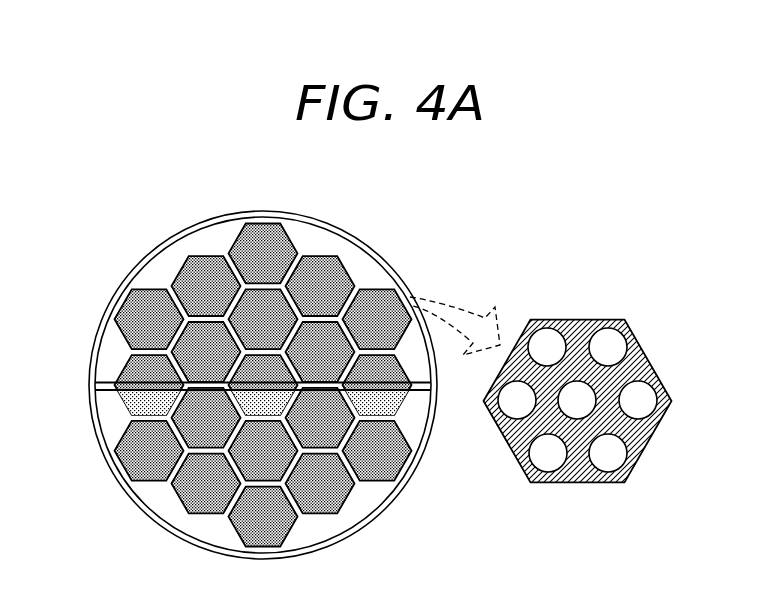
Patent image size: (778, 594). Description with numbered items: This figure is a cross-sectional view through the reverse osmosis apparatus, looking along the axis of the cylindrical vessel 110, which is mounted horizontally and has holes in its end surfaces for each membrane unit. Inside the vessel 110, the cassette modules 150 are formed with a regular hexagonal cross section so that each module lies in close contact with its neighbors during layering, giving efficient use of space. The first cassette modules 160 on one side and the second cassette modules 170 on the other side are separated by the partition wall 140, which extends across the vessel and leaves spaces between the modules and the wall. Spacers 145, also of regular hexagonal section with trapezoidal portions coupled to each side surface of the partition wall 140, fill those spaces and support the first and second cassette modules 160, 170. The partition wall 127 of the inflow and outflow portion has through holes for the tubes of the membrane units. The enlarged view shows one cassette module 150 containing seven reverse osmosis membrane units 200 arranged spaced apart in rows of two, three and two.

The vessel 110 is at (330, 225).
The partition wall of the inflow and outflow portion 127 is at (152, 275).
The partition wall 140 is at (104, 381).
The spacer 145 is at (137, 402).
The cassette module 150 is at (393, 335).
The first cassette module 160 is at (191, 284).
The second cassette module 170 is at (206, 412).
The reverse osmosis membrane unit 200 is at (607, 348).